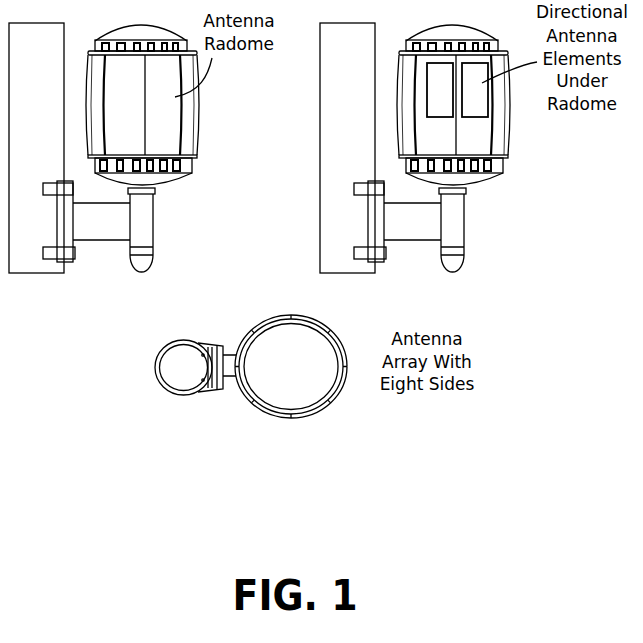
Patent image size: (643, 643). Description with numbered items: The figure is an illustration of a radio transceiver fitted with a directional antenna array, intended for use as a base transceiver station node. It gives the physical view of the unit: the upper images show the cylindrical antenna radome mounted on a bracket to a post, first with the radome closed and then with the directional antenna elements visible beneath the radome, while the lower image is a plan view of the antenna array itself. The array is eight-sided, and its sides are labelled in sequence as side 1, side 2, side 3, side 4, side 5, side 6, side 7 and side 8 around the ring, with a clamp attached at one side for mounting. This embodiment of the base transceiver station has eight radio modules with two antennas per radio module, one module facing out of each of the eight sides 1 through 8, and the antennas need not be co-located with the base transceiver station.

The antenna array side 1 is at (238, 346).
The antenna array side 2 is at (271, 315).
The antenna array side 3 is at (311, 315).
The antenna array side 4 is at (342, 347).
The antenna array side 5 is at (343, 386).
The antenna array side 6 is at (311, 419).
The antenna array side 7 is at (271, 419).
The antenna array side 8 is at (238, 389).